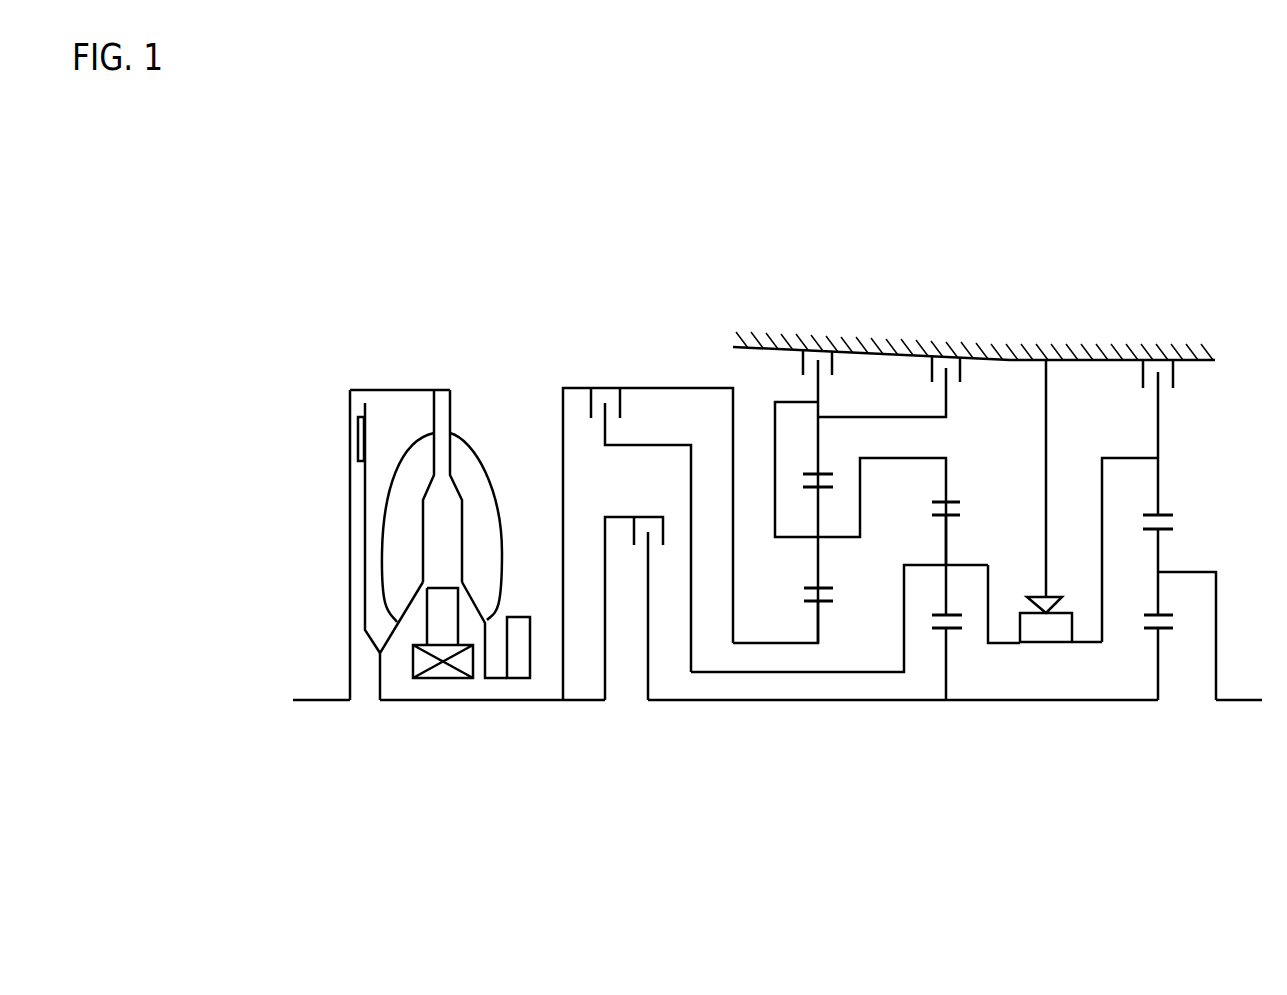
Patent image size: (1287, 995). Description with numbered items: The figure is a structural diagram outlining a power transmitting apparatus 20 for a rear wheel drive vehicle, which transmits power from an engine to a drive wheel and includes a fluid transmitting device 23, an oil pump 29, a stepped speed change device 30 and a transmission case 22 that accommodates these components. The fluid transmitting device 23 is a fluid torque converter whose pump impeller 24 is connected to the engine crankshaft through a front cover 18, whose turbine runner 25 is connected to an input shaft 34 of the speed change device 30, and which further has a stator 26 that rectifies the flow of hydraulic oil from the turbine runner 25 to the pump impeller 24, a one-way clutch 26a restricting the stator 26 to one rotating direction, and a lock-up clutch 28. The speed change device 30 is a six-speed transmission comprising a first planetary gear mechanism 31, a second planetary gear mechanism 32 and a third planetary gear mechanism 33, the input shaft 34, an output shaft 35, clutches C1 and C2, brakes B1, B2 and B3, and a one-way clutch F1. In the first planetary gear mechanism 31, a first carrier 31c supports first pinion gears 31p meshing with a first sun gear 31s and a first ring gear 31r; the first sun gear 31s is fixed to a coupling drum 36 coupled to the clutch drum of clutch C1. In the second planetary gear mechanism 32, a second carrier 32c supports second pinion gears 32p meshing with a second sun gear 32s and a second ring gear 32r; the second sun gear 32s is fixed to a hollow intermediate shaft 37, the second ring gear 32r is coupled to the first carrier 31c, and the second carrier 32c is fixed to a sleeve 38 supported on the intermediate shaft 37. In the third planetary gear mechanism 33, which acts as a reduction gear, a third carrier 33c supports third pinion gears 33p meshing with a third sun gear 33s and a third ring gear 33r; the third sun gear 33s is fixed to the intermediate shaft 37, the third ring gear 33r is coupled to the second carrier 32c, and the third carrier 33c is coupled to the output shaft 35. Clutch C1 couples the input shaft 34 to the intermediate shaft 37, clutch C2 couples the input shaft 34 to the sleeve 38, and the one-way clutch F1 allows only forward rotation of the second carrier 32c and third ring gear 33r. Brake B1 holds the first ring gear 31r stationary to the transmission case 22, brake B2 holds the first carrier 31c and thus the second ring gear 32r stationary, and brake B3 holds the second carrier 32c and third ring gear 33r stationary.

The power transmitting apparatus 20 is at (317, 389).
The front cover 18 is at (350, 535).
The lock-up clutch 28 is at (384, 427).
The turbine runner 25 is at (434, 437).
The fluid transmitting device 23 is at (475, 429).
The pump impeller 24 is at (477, 473).
The stator 26 is at (443, 628).
The one-way clutch 26a is at (409, 668).
The oil pump 29 is at (501, 668).
The input shaft 34 is at (548, 702).
The speed change device 30 is at (571, 363).
The clutch C2 is at (629, 423).
The clutch C1 is at (632, 549).
The coupling drum 36 is at (732, 615).
The sleeve 38 is at (858, 672).
The intermediate shaft 37 is at (1073, 702).
The transmission case 22 is at (1193, 362).
The brake B2 is at (848, 367).
The brake B1 is at (973, 388).
The brake B3 is at (1134, 398).
The first planetary gear mechanism 31 is at (802, 567).
The first ring gear 31r is at (820, 443).
The first carrier 31c is at (861, 533).
The first pinion gears 31p is at (820, 571).
The first sun gear 31s is at (820, 615).
The second planetary gear mechanism 32 is at (973, 503).
The second ring gear 32r is at (945, 484).
The second pinion gears 32p is at (948, 533).
The second carrier 32c is at (989, 592).
The second sun gear 32s is at (946, 645).
The one-way clutch F1 is at (1012, 636).
The third planetary gear mechanism 33 is at (1189, 525).
The third ring gear 33r is at (1160, 487).
The third pinion gears 33p is at (1161, 556).
The third carrier 33c is at (1218, 604).
The output shaft 35 is at (1255, 698).
The third sun gear 33s is at (1162, 648).